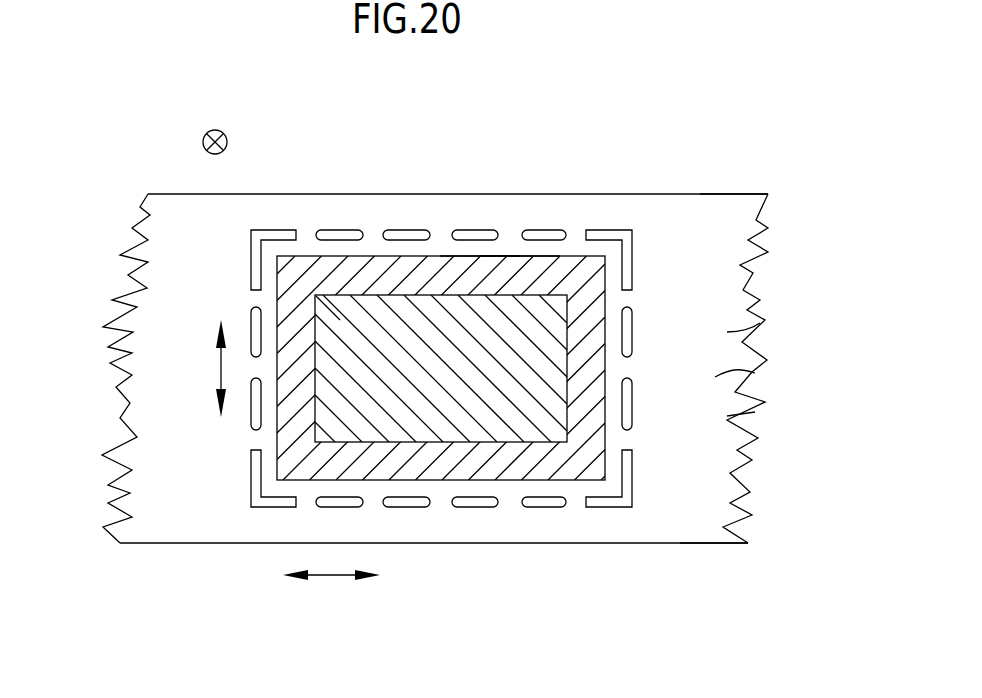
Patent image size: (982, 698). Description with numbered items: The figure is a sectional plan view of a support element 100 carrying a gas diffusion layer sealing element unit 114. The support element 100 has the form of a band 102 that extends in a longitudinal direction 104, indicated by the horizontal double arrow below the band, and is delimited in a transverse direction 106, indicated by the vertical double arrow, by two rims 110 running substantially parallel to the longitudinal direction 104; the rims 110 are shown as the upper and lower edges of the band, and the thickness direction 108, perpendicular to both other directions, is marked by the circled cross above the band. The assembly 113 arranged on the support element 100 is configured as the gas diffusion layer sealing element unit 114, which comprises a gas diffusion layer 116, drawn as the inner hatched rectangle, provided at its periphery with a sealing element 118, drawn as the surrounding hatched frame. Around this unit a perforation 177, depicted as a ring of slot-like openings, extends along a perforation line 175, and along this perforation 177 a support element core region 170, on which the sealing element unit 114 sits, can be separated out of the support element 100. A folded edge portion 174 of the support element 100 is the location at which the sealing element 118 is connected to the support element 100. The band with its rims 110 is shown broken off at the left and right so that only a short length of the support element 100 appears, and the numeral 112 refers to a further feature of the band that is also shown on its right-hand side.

The support element 100 is at (727, 247).
The band 102 is at (760, 323).
The longitudinal direction 104 is at (333, 576).
The transverse direction 106 is at (221, 369).
The thickness direction 108 is at (213, 130).
The rims 110 is at (744, 194).
The second layer of substrate 112 is at (755, 373).
The assembly 113 is at (477, 236).
The gas diffusion layer sealing element unit 114 is at (510, 236).
The gas diffusion layer 116 is at (488, 418).
The sealing element 118 is at (437, 277).
The support element core region 170 is at (463, 282).
The folded edge portion 174 is at (612, 212).
The perforation line 175 is at (277, 215).
The perforation 177 is at (549, 213).